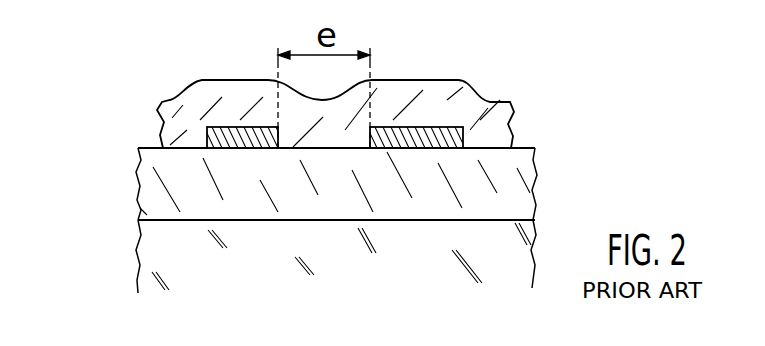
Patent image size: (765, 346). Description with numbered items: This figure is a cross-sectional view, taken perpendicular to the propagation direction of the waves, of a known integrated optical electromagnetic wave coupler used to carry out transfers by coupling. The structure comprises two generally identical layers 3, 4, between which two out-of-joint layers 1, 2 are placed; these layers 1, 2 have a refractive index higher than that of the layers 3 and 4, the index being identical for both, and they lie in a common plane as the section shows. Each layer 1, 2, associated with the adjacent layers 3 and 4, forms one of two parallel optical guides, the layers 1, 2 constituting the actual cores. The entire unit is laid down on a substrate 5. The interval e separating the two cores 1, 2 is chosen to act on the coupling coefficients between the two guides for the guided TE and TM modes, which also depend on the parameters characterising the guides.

The high-index layer (first guide core) 1 is at (216, 133).
The high-index layer (second guide core) 2 is at (423, 138).
The upper cladding layer 3 is at (180, 118).
The lower cladding layer 4 is at (172, 182).
The substrate 5 is at (167, 247).